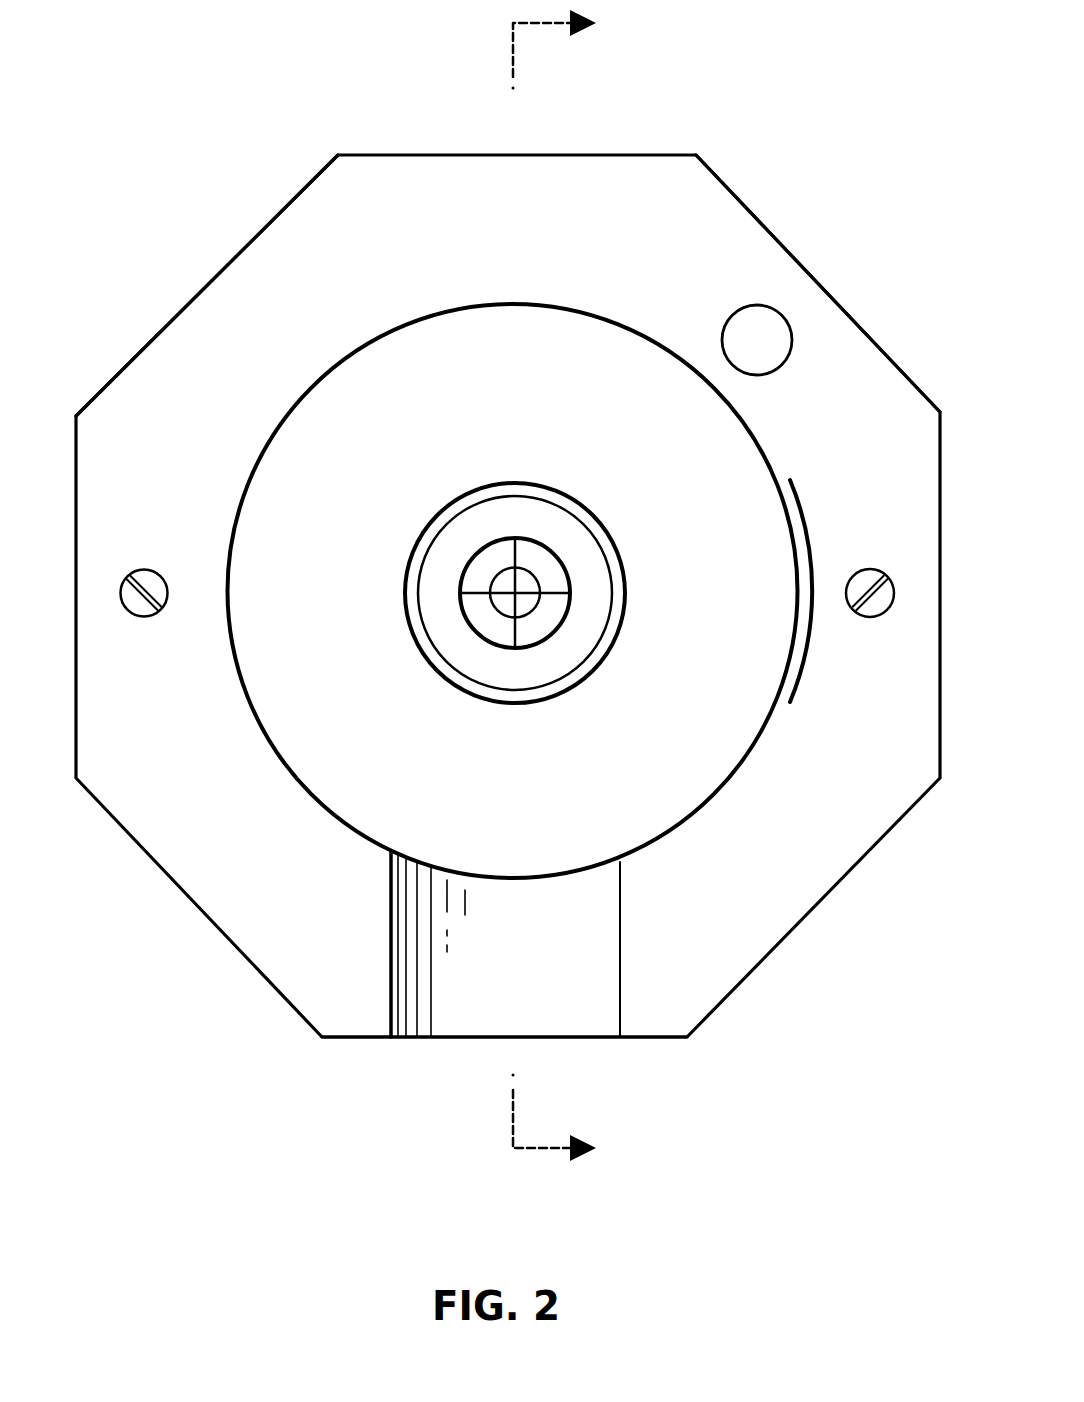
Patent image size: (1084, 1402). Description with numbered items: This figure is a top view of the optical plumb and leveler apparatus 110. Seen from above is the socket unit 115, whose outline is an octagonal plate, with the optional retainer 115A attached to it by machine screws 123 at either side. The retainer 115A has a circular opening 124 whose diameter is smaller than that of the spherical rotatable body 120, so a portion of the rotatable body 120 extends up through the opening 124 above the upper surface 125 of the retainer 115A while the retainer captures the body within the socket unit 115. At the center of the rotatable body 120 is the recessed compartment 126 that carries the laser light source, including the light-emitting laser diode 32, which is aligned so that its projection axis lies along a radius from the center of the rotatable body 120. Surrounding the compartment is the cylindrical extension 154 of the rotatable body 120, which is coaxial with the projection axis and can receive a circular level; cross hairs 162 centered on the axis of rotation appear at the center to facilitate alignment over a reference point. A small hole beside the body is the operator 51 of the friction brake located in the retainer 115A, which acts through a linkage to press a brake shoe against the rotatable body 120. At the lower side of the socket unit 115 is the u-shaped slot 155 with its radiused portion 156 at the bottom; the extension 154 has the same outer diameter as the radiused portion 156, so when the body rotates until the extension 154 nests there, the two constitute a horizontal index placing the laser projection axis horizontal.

The optical plumb and leveler apparatus 110 is at (219, 232).
The socket unit 115 is at (740, 983).
The retainer 115A is at (768, 900).
The rotatable body 120 is at (598, 317).
The machine screws 123 is at (163, 545).
The circular opening 124 is at (800, 575).
The upper surface 125 is at (157, 358).
The recessed compartment 126 is at (580, 632).
The cylindrical extension 154 is at (622, 595).
The u-shaped slot 155 is at (617, 1005).
The radiused portion 156 is at (438, 1020).
The cross hairs 162 is at (483, 592).
The light-emitting laser diode 32 is at (538, 582).
The operator 51 is at (735, 310).